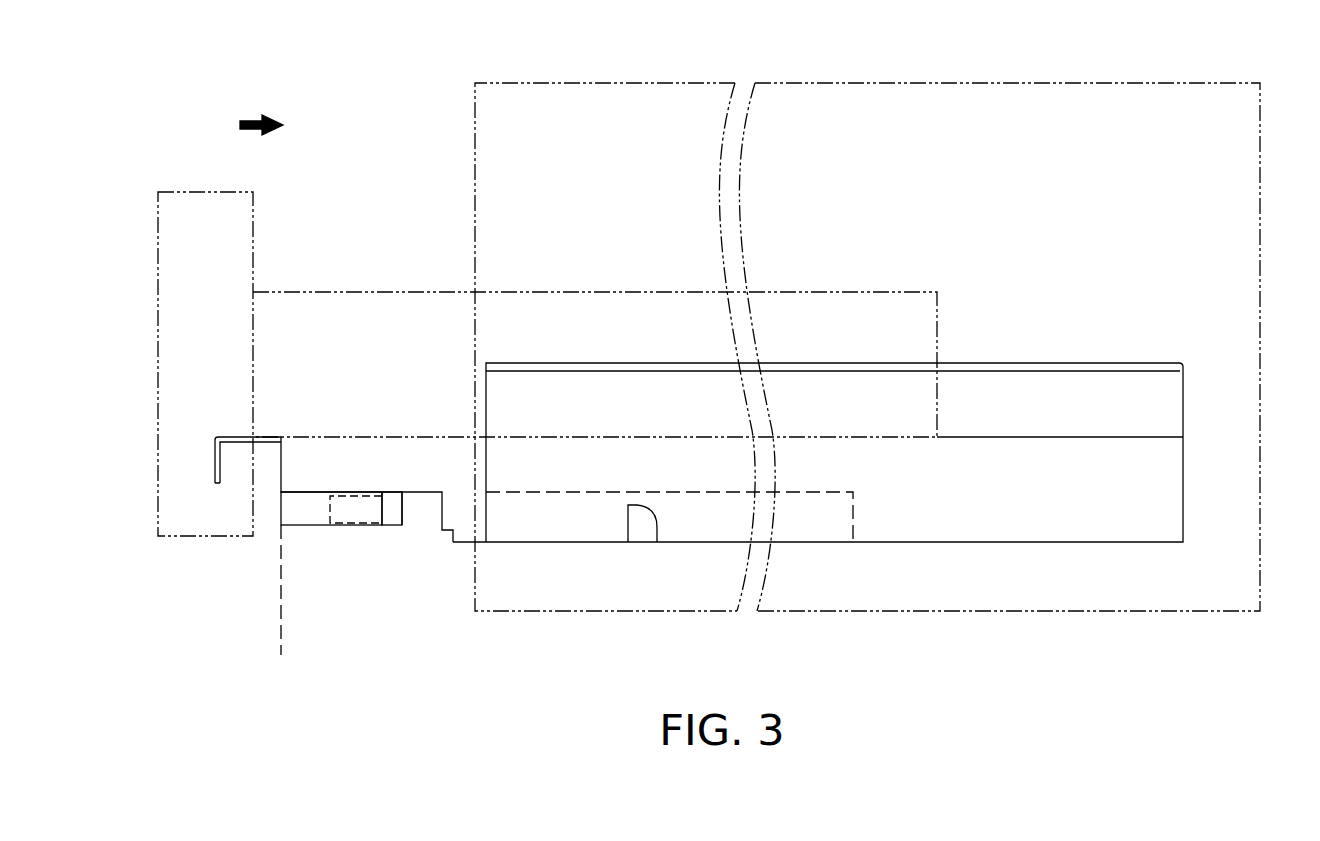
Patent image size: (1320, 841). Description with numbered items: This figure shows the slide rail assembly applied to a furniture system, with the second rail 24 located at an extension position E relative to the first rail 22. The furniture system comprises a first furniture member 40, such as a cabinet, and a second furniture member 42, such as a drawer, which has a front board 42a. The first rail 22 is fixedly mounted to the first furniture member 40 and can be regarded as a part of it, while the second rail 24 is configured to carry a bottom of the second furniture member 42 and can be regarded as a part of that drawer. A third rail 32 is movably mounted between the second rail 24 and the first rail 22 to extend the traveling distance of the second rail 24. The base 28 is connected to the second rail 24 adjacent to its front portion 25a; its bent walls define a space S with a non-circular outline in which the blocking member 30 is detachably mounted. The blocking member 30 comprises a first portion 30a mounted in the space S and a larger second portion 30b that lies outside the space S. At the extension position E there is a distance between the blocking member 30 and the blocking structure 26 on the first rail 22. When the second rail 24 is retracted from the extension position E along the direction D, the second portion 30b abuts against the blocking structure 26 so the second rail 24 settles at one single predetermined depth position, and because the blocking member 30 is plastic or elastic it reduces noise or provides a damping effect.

The first rail 22 is at (1165, 359).
The second rail 24 is at (423, 496).
The front portion 25a is at (287, 473).
The blocking structure 26 is at (643, 526).
The base 28 is at (313, 529).
The blocking member 30 is at (385, 529).
The first portion 30a is at (355, 510).
The second portion 30b is at (392, 515).
The third rail 32 is at (856, 533).
The first furniture member 40 is at (1198, 80).
The second furniture member 42 is at (367, 284).
The front board 42a is at (178, 202).
The direction D is at (251, 126).
The extension position E is at (279, 602).
The space S is at (318, 503).